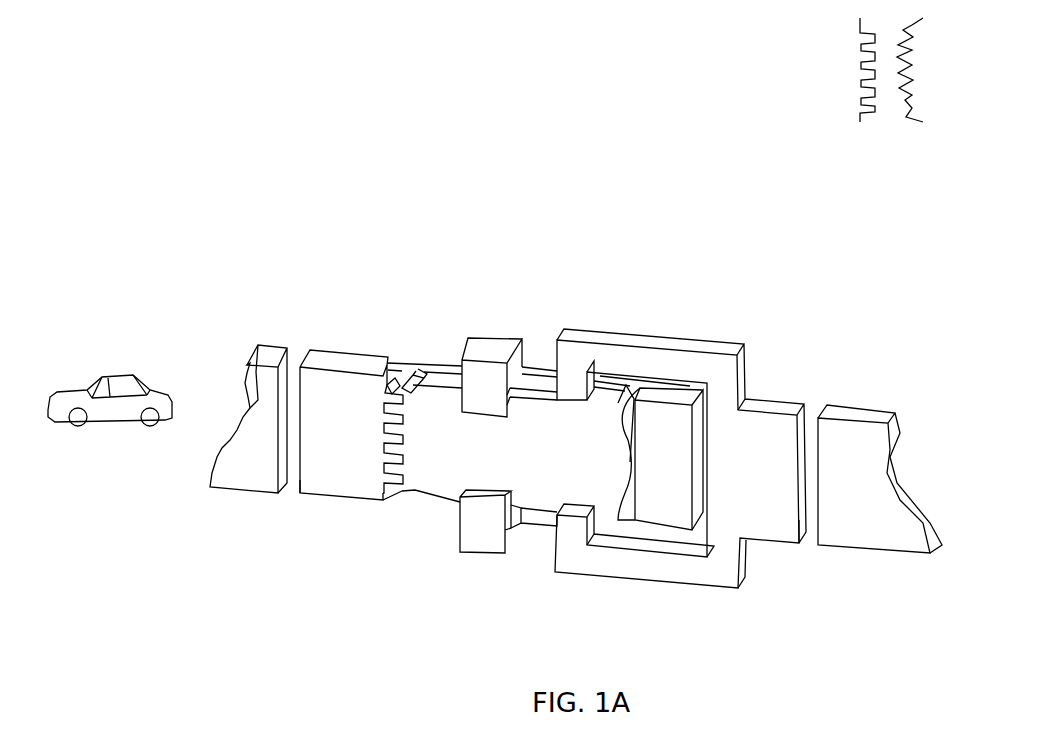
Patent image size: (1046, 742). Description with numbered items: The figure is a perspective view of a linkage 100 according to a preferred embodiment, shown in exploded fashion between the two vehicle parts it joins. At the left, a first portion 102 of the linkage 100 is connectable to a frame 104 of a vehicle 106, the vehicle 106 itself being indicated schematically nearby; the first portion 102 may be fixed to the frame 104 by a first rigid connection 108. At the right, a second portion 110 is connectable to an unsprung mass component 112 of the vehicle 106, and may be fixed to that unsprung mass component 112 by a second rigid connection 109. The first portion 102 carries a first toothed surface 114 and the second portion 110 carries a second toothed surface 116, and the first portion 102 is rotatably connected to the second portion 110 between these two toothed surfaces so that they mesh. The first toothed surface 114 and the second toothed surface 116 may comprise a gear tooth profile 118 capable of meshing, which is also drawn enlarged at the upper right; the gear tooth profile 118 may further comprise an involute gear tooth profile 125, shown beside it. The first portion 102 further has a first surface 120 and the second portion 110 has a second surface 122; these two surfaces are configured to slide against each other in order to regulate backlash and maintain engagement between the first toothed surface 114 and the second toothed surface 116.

The linkage 100 is at (562, 274).
The first portion 102 is at (344, 409).
The frame 104 is at (258, 377).
The vehicle 106 is at (112, 410).
The first rigid connection 108 is at (298, 485).
The second rigid connection 109 is at (800, 522).
The second portion 110 is at (718, 367).
The unsprung mass component 112 is at (855, 433).
The first toothed surface 114 is at (390, 392).
The second toothed surface 116 is at (406, 386).
The gear tooth profile 118 is at (400, 487).
The first surface 120 is at (632, 500).
The second surface 122 is at (630, 397).
The involute gear tooth profile 125 is at (905, 98).